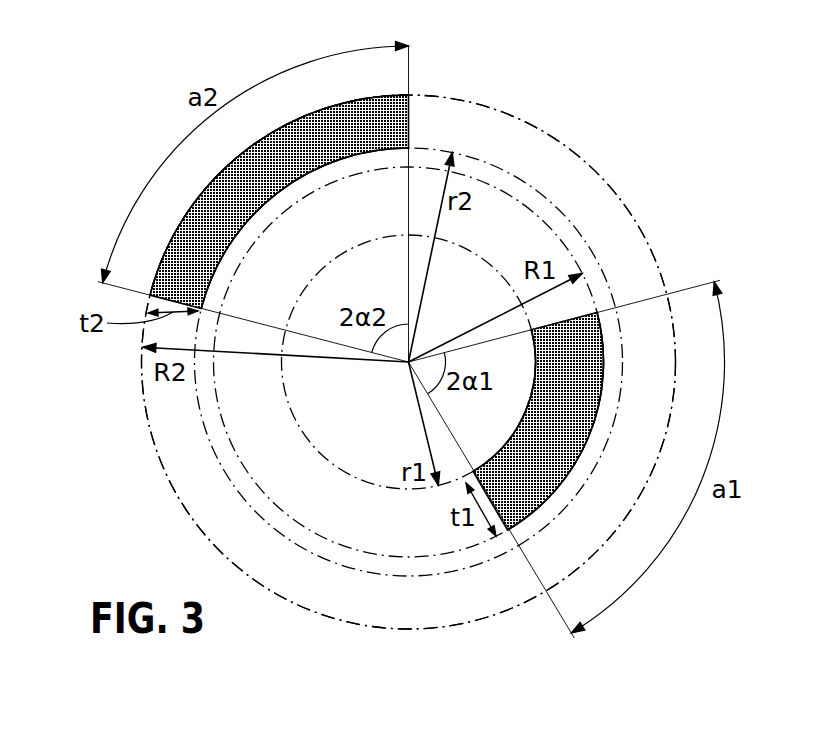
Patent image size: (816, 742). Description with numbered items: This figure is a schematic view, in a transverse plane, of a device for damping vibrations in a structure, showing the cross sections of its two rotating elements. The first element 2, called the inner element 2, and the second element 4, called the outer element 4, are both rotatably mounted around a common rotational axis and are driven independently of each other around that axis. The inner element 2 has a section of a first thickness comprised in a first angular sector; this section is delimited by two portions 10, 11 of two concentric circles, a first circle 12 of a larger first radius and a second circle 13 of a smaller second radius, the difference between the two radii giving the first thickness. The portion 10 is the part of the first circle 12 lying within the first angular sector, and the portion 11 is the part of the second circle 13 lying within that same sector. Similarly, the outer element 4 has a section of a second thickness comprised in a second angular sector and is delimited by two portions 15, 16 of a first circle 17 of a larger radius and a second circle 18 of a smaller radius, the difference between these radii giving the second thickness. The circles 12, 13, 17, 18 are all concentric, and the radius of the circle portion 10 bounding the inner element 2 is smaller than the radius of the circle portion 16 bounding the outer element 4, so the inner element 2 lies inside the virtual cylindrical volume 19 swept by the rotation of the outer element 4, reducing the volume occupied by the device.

The first element 2 is at (573, 363).
The second element 4 is at (193, 243).
The portion 10 is at (525, 522).
The portion 11 is at (488, 462).
The first circle 12 is at (375, 557).
The second circle 13 is at (347, 480).
The portion 15 is at (393, 95).
The portion 16 is at (333, 163).
The first circle 17 is at (150, 443).
The second circle 18 is at (213, 455).
The virtual cylindrical volume 19 is at (143, 408).